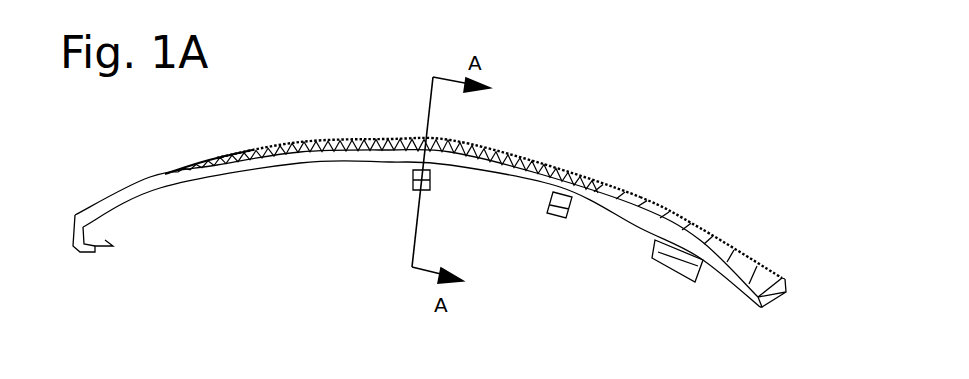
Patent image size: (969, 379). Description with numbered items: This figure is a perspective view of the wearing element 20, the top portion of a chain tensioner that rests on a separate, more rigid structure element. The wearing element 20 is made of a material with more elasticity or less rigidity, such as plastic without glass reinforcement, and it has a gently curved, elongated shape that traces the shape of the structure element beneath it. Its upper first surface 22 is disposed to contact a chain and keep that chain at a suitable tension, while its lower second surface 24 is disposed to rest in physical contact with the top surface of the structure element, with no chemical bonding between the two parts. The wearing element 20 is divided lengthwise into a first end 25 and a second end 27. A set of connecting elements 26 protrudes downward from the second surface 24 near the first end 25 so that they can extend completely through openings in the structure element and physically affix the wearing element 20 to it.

The wearing element 20 is at (588, 91).
The first surface 22 is at (583, 173).
The second surface 24 is at (402, 168).
The first end 25 is at (640, 208).
The connecting elements 26 is at (418, 184).
The second end 27 is at (218, 162).